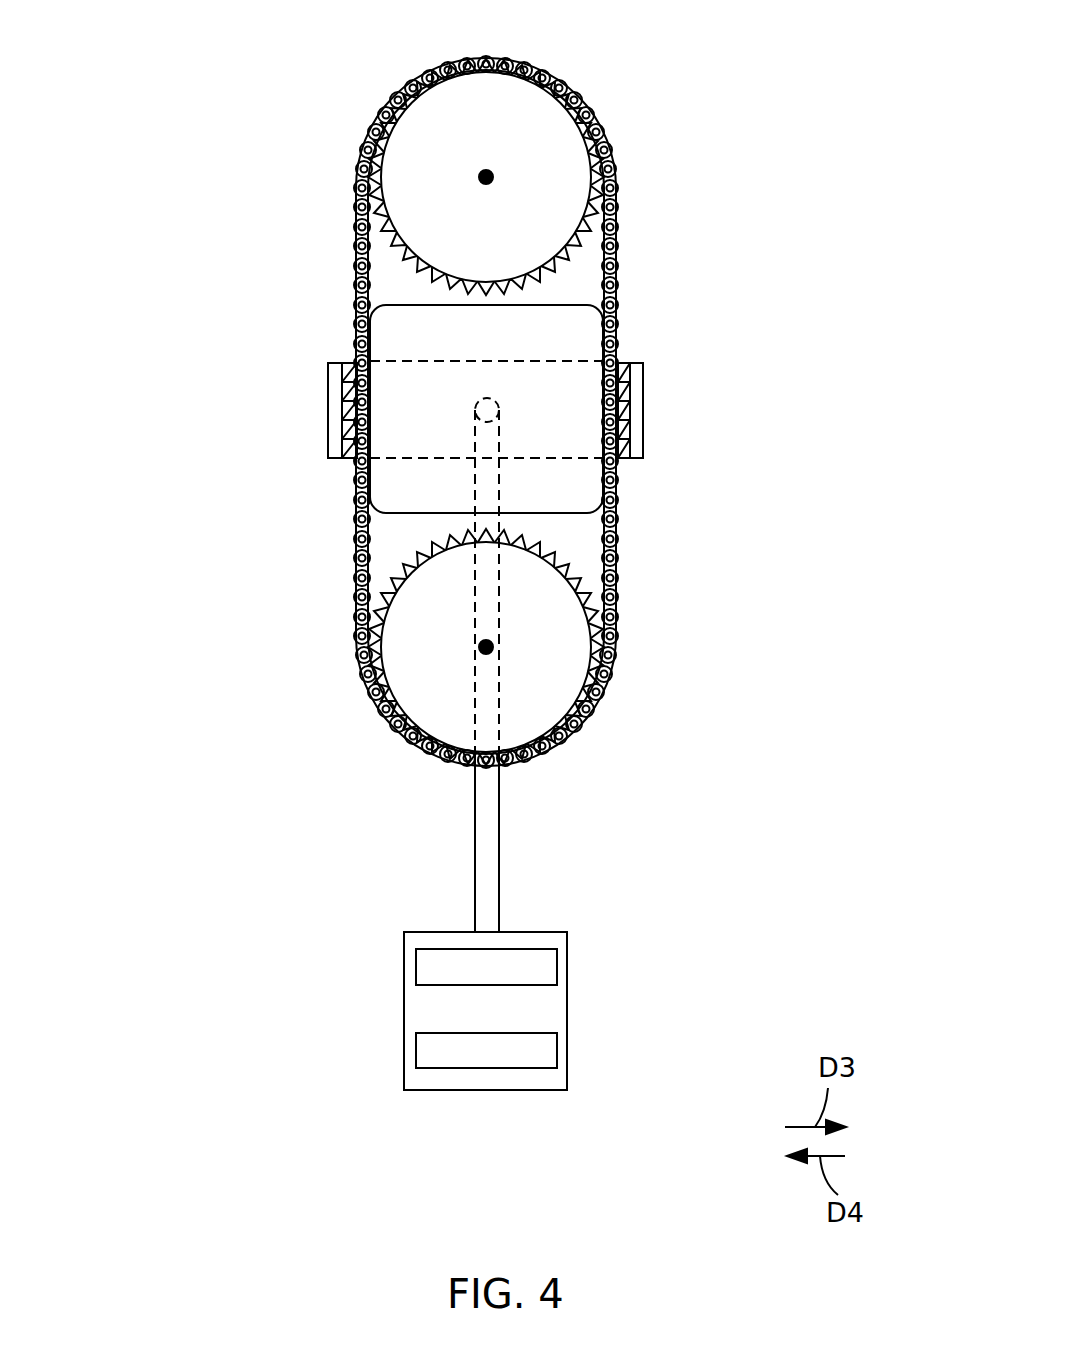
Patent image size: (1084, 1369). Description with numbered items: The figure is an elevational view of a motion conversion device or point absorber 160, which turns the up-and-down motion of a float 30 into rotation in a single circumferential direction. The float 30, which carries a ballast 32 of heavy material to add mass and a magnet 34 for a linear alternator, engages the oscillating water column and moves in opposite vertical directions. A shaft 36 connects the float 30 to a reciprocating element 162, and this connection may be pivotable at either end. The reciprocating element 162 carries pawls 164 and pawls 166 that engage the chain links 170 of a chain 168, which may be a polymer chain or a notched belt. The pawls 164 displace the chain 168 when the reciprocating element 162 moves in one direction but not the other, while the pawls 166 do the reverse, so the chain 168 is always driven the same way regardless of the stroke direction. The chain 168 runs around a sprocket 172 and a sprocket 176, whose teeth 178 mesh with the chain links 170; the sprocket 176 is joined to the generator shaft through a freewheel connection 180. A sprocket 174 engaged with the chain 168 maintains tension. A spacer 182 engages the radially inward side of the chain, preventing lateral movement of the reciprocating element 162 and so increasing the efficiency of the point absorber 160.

The motion conversion device or point absorber 160 is at (212, 186).
The chain 168 is at (617, 283).
The teeth 178 is at (604, 148).
The sprocket 176 is at (519, 98).
The freewheel connection 180 is at (484, 176).
The chain links 170 is at (603, 320).
The spacer 182 is at (585, 350).
The pawls 164 is at (345, 408).
The reciprocating element 162 is at (637, 387).
The pawls 166 is at (625, 410).
The sprocket 172 is at (540, 707).
The sprocket 174 is at (598, 640).
The shaft 36 is at (487, 860).
The float 30 is at (568, 1020).
The magnet 34 is at (543, 972).
The ballast 32 is at (543, 1047).